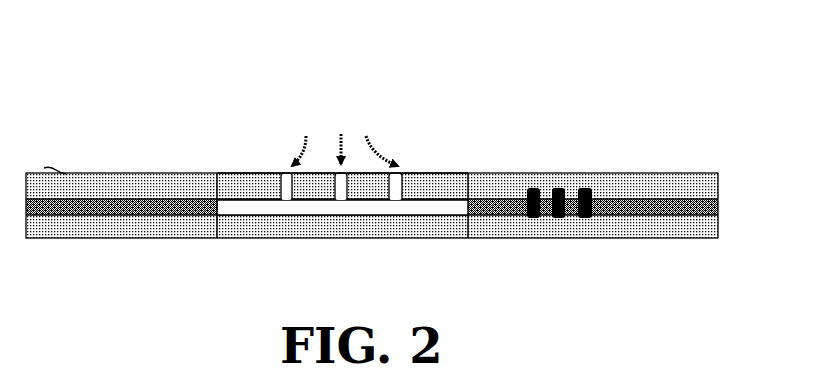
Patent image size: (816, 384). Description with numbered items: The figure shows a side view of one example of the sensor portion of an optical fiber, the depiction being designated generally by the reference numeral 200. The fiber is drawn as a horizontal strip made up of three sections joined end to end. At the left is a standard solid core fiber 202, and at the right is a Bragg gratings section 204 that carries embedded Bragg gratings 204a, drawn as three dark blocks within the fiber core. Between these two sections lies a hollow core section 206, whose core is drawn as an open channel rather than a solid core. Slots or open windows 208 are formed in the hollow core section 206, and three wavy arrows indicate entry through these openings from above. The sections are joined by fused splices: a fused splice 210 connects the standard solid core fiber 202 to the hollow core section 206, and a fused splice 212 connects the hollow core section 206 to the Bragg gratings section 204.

The sensor portion depiction 200 is at (541, 84).
The standard solid core fiber 202 is at (83, 234).
The Bragg gratings section 204 is at (657, 235).
The embedded Bragg gratings 204a is at (562, 213).
The hollow core section 206 is at (312, 237).
The slots or open windows 208 is at (345, 133).
The fused splice 210 is at (217, 182).
The fused splice 212 is at (468, 178).